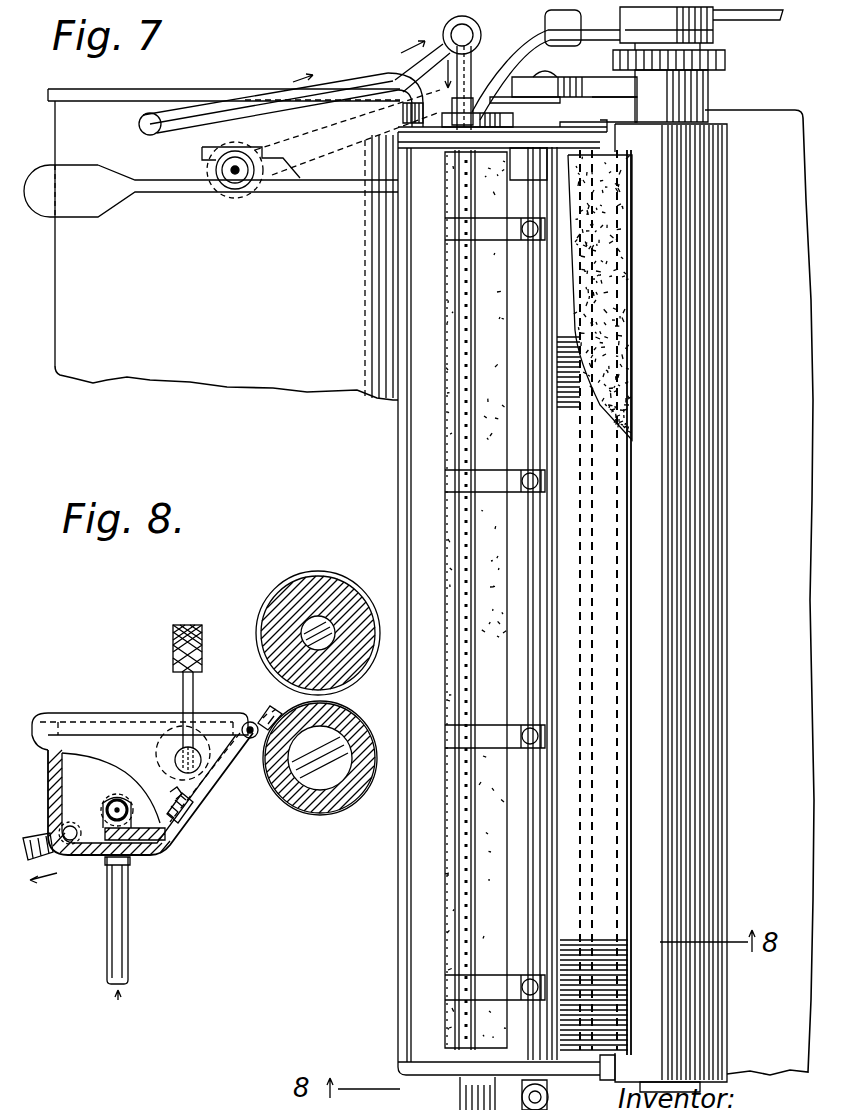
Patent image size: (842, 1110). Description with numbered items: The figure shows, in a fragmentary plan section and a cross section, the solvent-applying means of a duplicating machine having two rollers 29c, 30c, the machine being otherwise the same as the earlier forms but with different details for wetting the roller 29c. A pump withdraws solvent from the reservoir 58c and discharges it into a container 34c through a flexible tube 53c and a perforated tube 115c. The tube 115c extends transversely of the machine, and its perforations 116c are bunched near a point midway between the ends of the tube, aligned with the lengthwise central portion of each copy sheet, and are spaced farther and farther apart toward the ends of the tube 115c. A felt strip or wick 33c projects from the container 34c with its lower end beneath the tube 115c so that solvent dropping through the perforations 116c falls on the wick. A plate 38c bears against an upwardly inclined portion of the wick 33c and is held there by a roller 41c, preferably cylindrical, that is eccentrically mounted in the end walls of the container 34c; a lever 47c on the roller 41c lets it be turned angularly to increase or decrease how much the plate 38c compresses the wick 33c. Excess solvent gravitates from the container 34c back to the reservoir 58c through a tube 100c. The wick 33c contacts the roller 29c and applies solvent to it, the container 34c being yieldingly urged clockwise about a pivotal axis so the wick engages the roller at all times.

In FIG. 7, the tube 100c is at (259, 70).
In FIG. 8, the tube 100c is at (25, 880).
In FIG. 7, the flexible tube 53c is at (467, 68).
In FIG. 8, the flexible tube 53c is at (124, 932).
In FIG. 7, the reservoir 58c is at (160, 355).
In FIG. 7, the container 34c is at (398, 452).
In FIG. 8, the container 34c is at (30, 737).
In FIG. 7, the felt strip or wick 33c is at (618, 308).
In FIG. 8, the felt strip or wick 33c is at (152, 858).
In FIG. 7, the plate 38c is at (618, 834).
In FIG. 8, the plate 38c is at (262, 708).
In FIG. 7, the roller 41c is at (540, 890).
In FIG. 8, the roller 41c is at (160, 762).
In FIG. 7, the roller 29c is at (708, 885).
In FIG. 8, the roller 29c is at (302, 815).
In FIG. 8, the roller 30c is at (333, 588).
In FIG. 7, the perforations 116c is at (450, 947).
In FIG. 8, the perforations 116c is at (95, 856).
In FIG. 7, the perforated tube 115c is at (448, 958).
In FIG. 8, the perforated tube 115c is at (108, 801).
In FIG. 7, the lever 47c is at (522, 1097).
In FIG. 8, the lever 47c is at (173, 662).